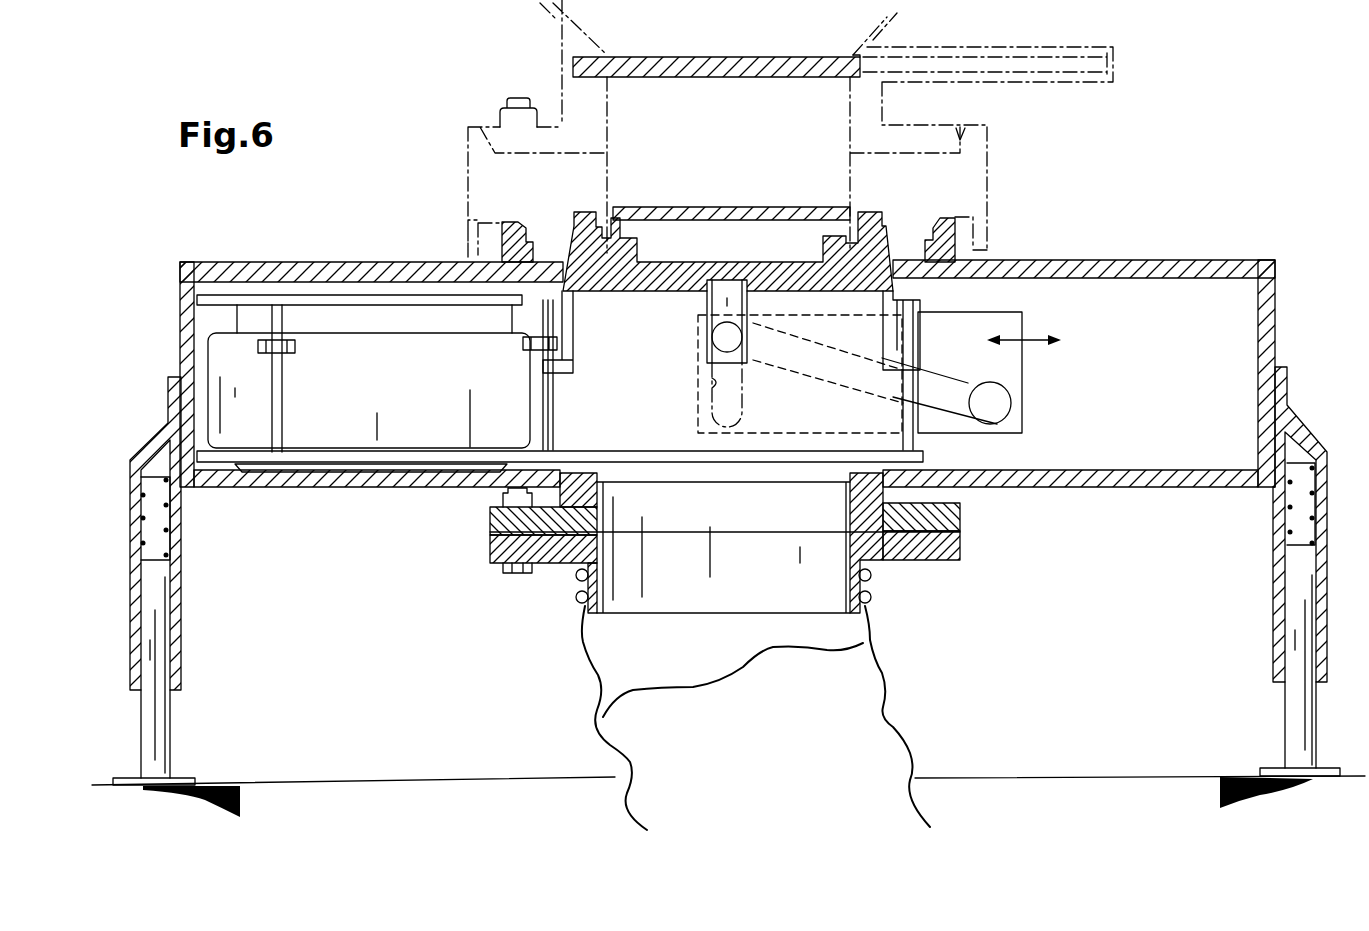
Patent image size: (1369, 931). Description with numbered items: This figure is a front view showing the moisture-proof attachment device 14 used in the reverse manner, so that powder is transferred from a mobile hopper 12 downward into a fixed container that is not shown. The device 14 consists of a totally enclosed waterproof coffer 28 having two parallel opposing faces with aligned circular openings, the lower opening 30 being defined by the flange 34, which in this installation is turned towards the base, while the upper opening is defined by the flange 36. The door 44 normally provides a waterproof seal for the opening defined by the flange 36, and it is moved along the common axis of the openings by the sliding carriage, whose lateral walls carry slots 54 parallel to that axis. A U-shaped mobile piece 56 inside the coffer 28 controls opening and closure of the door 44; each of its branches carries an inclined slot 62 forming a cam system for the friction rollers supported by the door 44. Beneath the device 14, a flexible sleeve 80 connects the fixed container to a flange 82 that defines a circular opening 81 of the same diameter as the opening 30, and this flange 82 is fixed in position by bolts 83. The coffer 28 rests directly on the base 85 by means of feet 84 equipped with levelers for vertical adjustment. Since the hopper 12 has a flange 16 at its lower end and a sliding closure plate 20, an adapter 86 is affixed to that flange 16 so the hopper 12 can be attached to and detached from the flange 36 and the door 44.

The hopper 12 is at (540, 14).
The moisture-proof attachment device 14 is at (279, 258).
The flange 16 is at (933, 133).
The plate 20 is at (771, 54).
The waterproof coffer 28 is at (1162, 258).
The circular opening 30 is at (850, 514).
The flange 34 is at (962, 523).
The flange 36 is at (503, 234).
The door 44 is at (648, 288).
The slot 54 is at (713, 387).
The mobile piece 56 is at (1022, 317).
The slot 62 is at (1000, 406).
The flexible sleeve 80 is at (900, 688).
The circular opening 81 is at (604, 592).
The flange 82 is at (962, 548).
The bolts 83 is at (514, 571).
The feet 84 is at (195, 577).
The base 85 is at (215, 777).
The adapter 86 is at (995, 214).